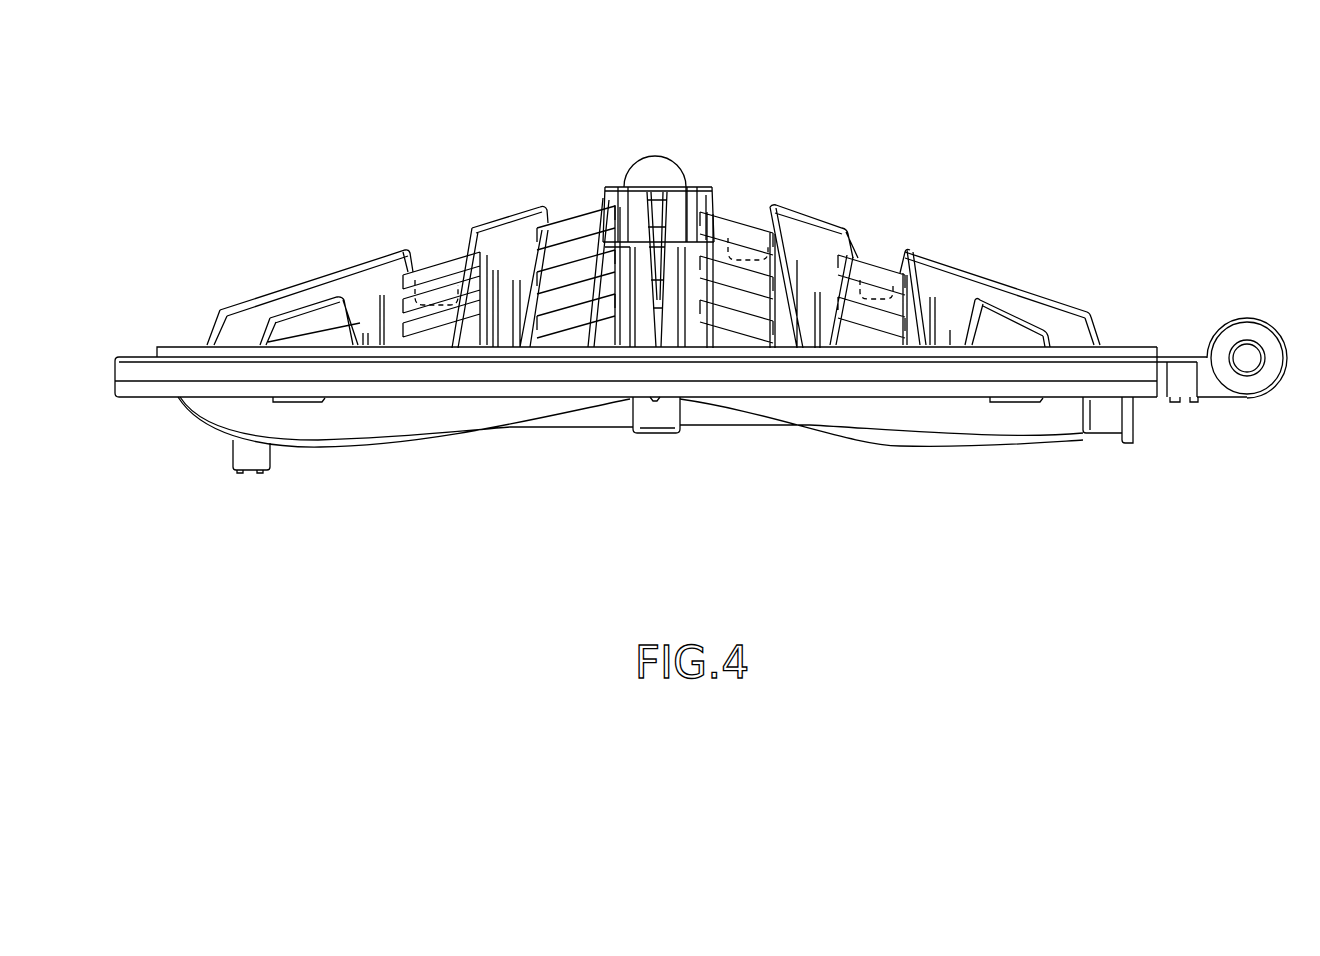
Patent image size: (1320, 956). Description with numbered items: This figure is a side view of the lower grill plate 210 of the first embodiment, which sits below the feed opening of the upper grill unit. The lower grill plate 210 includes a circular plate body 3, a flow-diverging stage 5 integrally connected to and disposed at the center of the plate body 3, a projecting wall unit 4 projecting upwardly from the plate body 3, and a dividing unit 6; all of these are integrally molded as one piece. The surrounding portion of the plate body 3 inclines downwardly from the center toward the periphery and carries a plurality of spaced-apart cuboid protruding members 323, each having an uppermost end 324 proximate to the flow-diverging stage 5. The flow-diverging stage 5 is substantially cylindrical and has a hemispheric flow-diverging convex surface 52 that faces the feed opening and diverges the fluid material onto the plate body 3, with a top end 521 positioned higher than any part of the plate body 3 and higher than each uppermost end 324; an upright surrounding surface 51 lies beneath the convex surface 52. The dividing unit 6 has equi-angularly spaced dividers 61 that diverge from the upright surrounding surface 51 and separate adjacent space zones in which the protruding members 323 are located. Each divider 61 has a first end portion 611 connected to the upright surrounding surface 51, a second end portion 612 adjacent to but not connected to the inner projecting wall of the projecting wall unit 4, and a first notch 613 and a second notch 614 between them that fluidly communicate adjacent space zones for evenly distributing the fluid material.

The plate body 3 is at (900, 400).
The projecting wall unit 4 is at (790, 350).
The flow-diverging stage 5 is at (674, 150).
The upright surrounding surface 51 is at (682, 195).
The flow-diverging convex surface 52 is at (648, 182).
The top end 521 is at (662, 165).
The dividing unit 6 is at (821, 206).
The divider 61 is at (340, 292).
The first end portion 611 is at (707, 212).
The second end portion 612 is at (1082, 328).
The first notch 613 is at (872, 255).
The second notch 614 is at (745, 210).
The lower grill plate 210 is at (985, 248).
The protruding member 323 is at (575, 232).
The uppermost end 324 is at (580, 238).